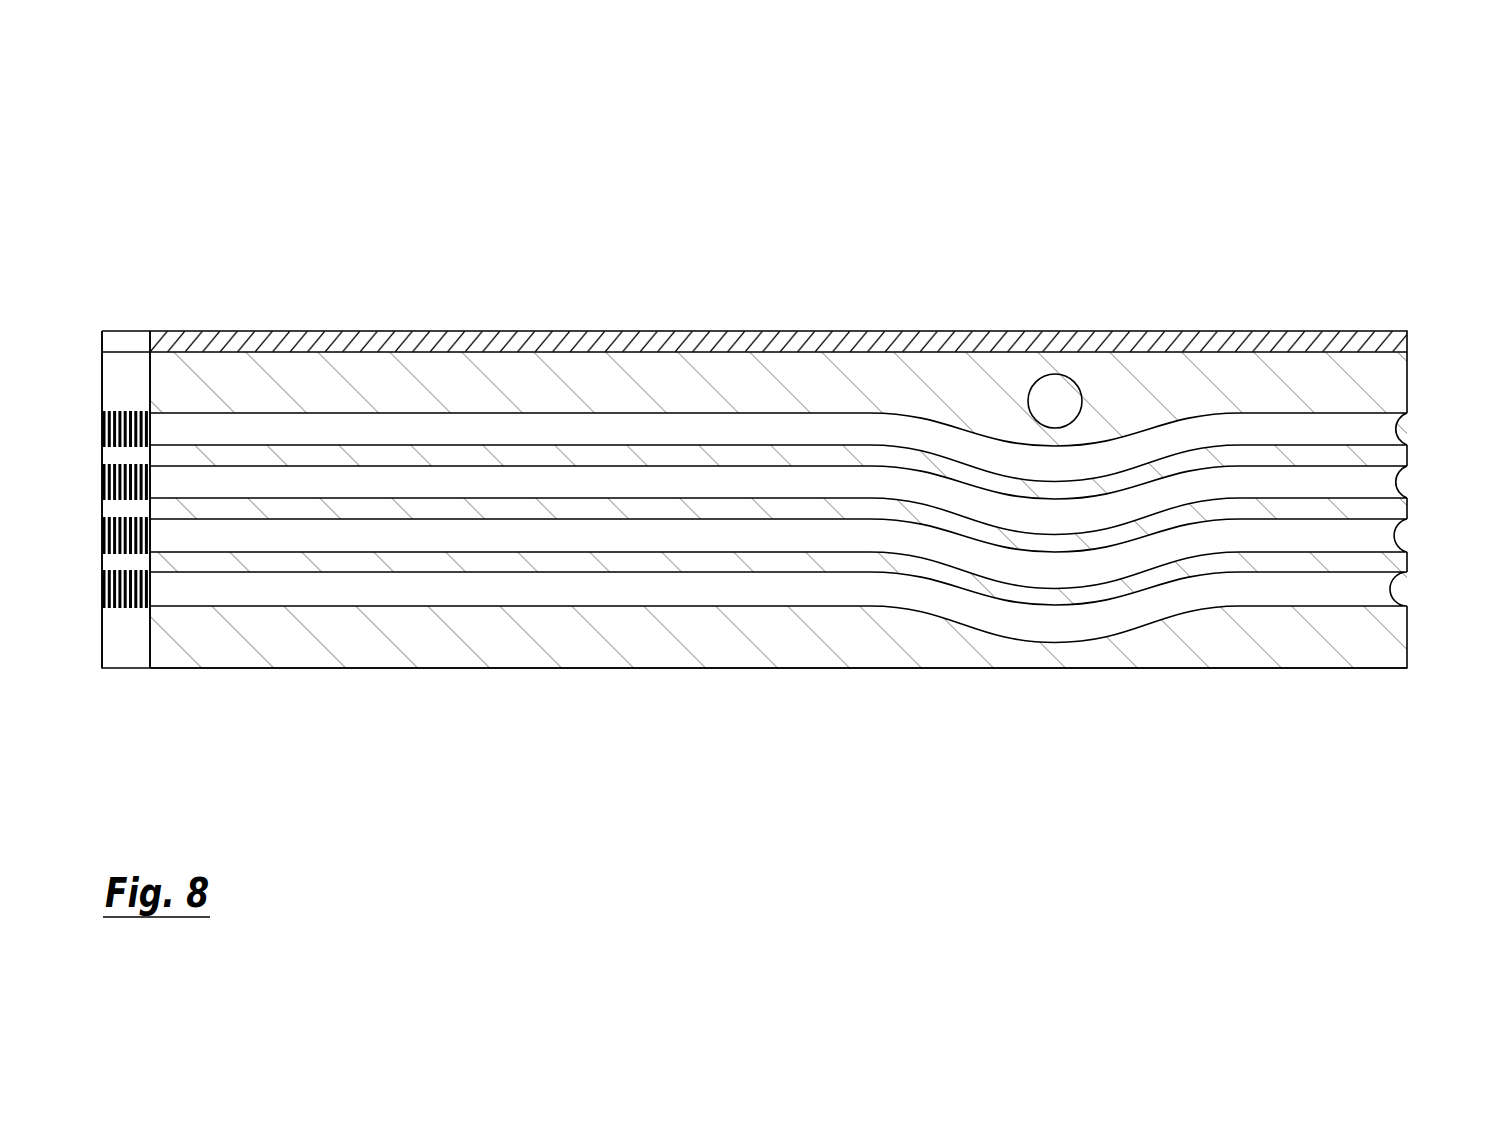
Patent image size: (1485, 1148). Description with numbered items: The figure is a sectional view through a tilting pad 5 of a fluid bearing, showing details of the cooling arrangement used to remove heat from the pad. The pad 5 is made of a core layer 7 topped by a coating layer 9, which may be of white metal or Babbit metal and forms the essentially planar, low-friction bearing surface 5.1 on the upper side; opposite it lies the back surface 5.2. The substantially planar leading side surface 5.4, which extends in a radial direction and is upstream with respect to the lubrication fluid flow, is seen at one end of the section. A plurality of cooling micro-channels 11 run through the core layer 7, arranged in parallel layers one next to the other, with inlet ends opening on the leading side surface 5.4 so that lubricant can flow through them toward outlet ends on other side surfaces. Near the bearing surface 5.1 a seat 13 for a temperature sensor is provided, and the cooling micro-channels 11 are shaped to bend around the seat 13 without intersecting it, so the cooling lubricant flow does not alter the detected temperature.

The pad 5 is at (787, 483).
The bearing surface 5.1 is at (494, 327).
The back surface 5.2 is at (776, 671).
The leading side surface 5.4 is at (131, 640).
The core layer 7 is at (1422, 352).
The coating layer 9 is at (1422, 331).
The cooling micro-channels 11 is at (233, 430).
The seat 13 is at (1055, 400).